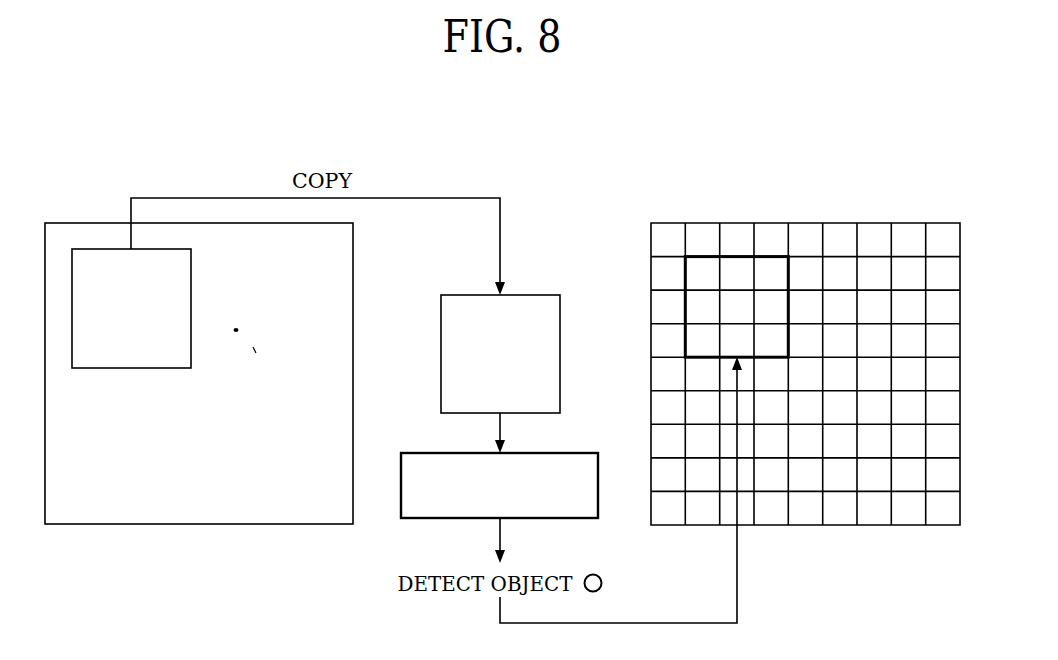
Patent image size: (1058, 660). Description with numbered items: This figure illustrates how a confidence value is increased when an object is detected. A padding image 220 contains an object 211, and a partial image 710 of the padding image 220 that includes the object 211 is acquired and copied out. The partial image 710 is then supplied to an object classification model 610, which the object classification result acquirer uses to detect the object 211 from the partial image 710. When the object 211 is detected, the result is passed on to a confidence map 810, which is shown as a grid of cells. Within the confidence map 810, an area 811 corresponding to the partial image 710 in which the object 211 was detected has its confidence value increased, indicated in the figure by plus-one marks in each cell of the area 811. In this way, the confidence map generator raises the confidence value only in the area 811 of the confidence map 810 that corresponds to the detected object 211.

The object 211 is at (173, 351).
The padding image 220 is at (190, 525).
The object classification model 610 is at (432, 453).
The partial image 710 is at (525, 295).
The confidence map 810 is at (890, 223).
The area 811 is at (742, 257).